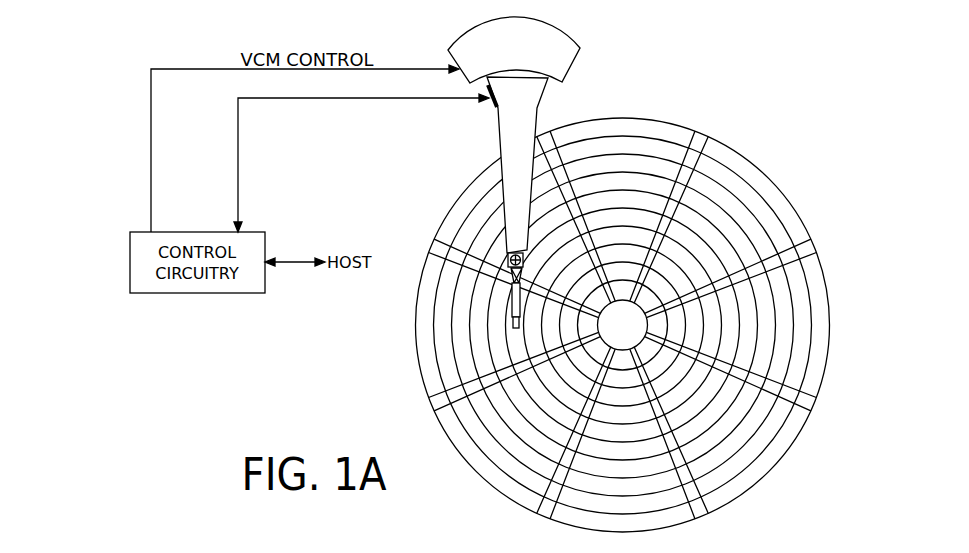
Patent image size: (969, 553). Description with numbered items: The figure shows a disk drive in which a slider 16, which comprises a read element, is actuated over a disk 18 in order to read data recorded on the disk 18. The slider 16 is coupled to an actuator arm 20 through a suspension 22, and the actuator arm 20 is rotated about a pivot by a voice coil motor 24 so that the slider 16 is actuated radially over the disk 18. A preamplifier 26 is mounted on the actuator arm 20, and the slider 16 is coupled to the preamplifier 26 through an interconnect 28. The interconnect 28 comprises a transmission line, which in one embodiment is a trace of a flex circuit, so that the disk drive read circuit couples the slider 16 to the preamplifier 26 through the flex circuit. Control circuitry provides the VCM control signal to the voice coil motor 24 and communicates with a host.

The slider 16 is at (497, 328).
The disk 18 is at (769, 165).
The actuator arm 20 is at (501, 165).
The suspension 22 is at (498, 304).
The voice coil motor 24 is at (571, 67).
The preamplifier 26 is at (492, 107).
The interconnect 28 is at (498, 150).